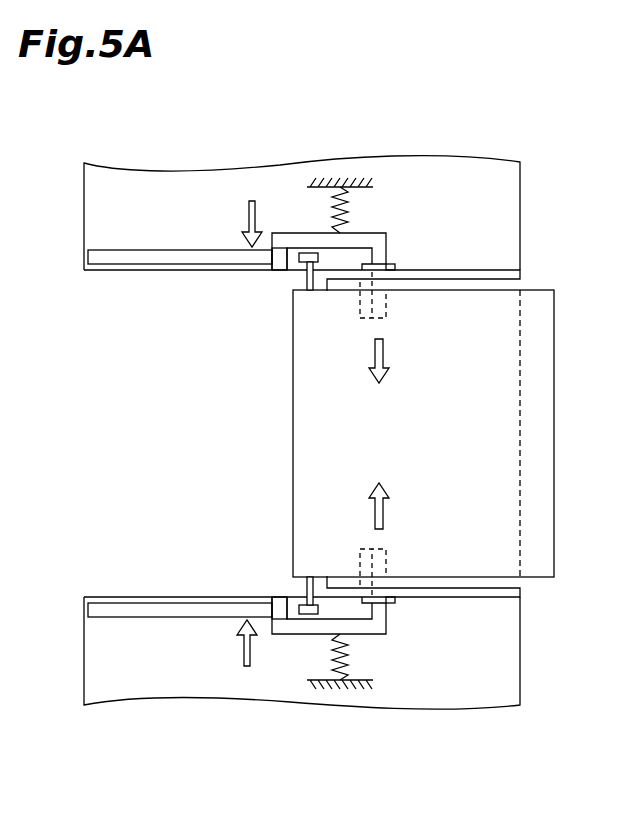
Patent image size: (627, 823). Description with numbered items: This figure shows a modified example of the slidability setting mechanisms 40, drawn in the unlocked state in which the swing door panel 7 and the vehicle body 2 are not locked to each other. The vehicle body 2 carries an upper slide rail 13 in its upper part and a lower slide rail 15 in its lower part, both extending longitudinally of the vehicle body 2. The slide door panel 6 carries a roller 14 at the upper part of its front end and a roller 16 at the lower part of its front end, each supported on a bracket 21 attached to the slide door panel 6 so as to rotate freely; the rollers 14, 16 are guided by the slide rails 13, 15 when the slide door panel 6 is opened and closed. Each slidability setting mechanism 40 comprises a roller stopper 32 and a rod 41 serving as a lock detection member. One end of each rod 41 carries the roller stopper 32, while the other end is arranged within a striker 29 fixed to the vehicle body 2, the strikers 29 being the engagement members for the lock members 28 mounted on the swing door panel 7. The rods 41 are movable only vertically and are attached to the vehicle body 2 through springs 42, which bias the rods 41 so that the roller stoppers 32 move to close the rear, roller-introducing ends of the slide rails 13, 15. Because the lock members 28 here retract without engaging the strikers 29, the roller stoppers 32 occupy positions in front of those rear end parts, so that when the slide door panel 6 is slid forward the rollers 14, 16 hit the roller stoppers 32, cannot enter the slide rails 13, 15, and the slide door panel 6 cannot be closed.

The vehicle body 2 is at (150, 187).
The slide door panel 6 is at (543, 437).
The swing door panel 7 is at (487, 284).
The upper slide rail 13 is at (158, 257).
The roller 14 is at (310, 255).
The lower slide rail 15 is at (158, 612).
The roller 16 is at (310, 614).
The bracket 21 is at (308, 290).
The lock member 28 is at (363, 433).
The striker 29 is at (397, 266).
The roller stopper 32 is at (278, 268).
The slidability setting mechanism 40 is at (365, 436).
The rod 41 is at (368, 240).
The spring 42 is at (349, 205).